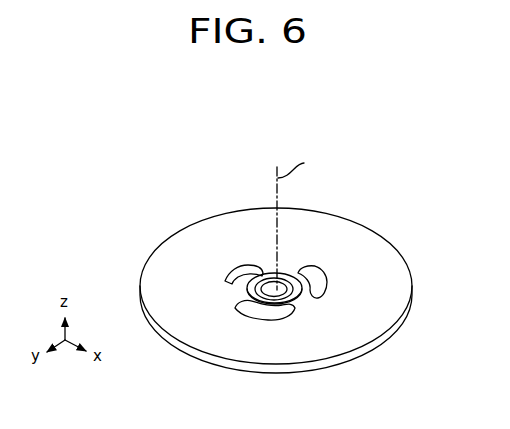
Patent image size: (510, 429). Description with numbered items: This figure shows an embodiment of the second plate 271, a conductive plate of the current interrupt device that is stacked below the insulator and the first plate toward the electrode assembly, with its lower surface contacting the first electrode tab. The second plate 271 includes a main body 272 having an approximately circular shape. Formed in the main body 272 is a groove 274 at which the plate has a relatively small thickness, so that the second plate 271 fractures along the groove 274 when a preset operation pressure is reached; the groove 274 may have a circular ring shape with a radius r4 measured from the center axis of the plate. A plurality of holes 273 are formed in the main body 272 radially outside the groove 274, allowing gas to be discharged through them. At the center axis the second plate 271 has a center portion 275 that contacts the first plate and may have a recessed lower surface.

The second plate 271 is at (359, 176).
The main body 272 is at (402, 278).
The holes 273 is at (317, 290).
The groove 274 is at (269, 279).
The center portion 275 is at (270, 284).
The radius of the groove r4 is at (284, 290).